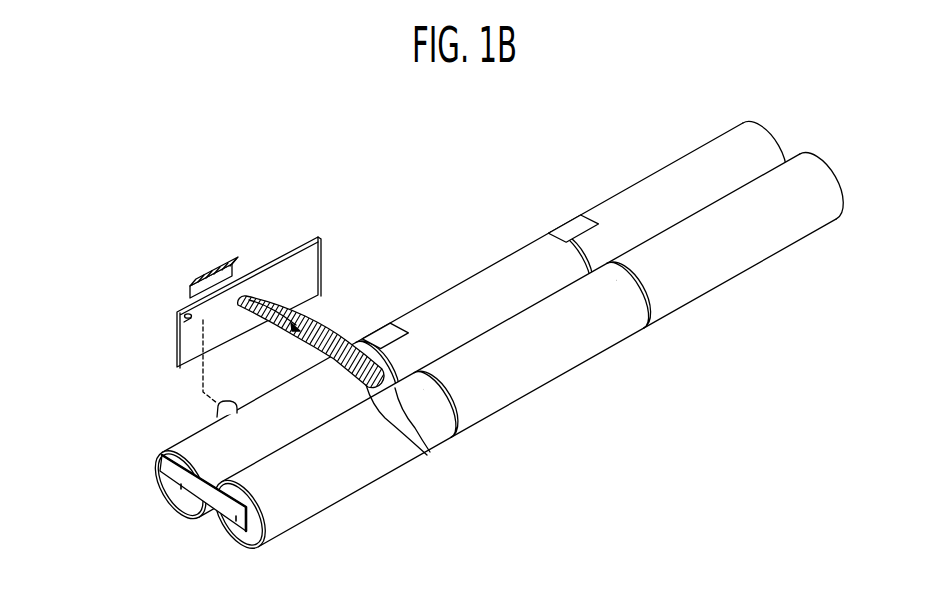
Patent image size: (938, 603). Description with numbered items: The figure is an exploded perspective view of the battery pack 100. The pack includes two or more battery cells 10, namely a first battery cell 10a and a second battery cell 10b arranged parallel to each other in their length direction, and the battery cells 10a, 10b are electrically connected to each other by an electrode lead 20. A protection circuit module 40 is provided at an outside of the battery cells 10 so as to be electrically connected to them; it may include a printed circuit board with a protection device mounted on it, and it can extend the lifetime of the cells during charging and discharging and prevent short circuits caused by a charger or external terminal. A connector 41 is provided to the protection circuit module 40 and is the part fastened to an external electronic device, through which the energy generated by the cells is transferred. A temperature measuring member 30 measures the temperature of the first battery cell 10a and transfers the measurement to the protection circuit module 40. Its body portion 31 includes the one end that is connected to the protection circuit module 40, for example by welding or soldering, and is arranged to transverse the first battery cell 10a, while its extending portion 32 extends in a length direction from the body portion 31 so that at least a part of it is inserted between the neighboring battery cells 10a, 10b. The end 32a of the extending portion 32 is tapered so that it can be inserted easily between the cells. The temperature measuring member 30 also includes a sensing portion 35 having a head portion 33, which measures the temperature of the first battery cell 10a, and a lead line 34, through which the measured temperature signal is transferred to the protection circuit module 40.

The battery pack 100 is at (283, 140).
The battery cells 10 is at (82, 428).
The first battery cell 10a is at (190, 437).
The second battery cell 10b is at (183, 483).
The electrode lead 20 is at (199, 517).
The temperature measuring member 30 is at (356, 340).
The body portion 31 is at (294, 287).
The extending portion 32 is at (345, 326).
The end of the extending portion 32a is at (427, 455).
The head portion 33 is at (146, 346).
The lead line 34 is at (186, 320).
The sensing portion 35 is at (172, 365).
The protection circuit module 40 is at (218, 272).
The connector 41 is at (197, 286).